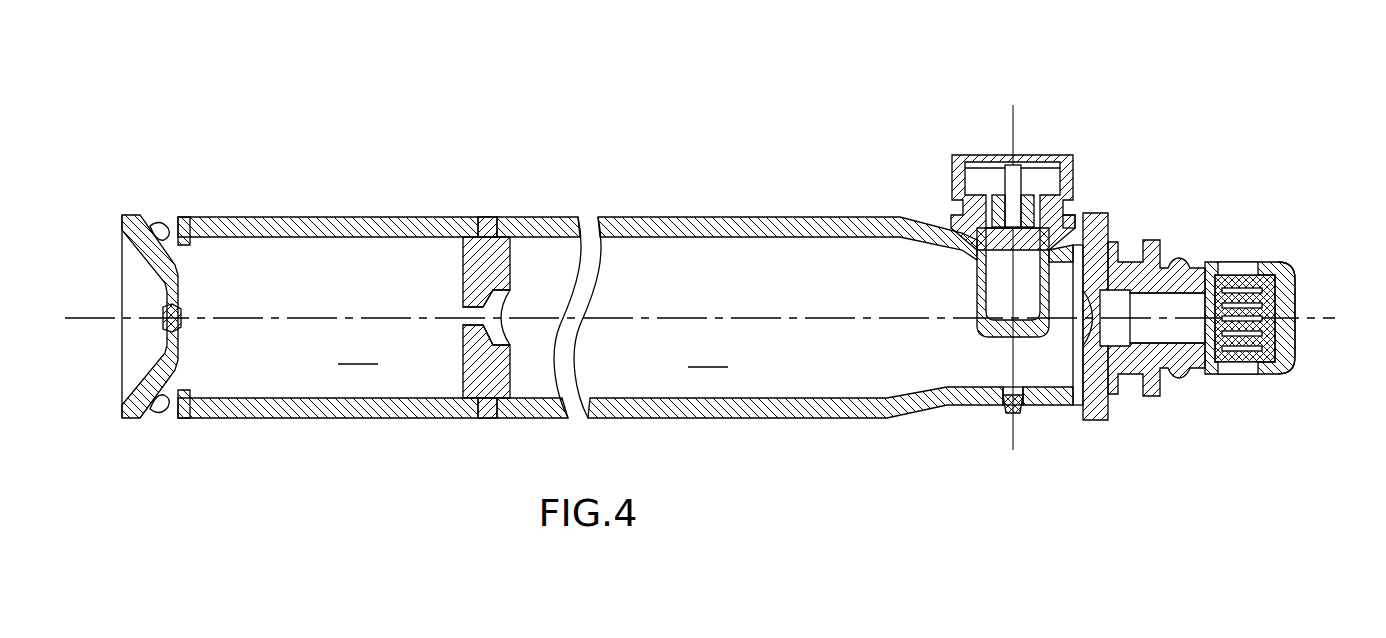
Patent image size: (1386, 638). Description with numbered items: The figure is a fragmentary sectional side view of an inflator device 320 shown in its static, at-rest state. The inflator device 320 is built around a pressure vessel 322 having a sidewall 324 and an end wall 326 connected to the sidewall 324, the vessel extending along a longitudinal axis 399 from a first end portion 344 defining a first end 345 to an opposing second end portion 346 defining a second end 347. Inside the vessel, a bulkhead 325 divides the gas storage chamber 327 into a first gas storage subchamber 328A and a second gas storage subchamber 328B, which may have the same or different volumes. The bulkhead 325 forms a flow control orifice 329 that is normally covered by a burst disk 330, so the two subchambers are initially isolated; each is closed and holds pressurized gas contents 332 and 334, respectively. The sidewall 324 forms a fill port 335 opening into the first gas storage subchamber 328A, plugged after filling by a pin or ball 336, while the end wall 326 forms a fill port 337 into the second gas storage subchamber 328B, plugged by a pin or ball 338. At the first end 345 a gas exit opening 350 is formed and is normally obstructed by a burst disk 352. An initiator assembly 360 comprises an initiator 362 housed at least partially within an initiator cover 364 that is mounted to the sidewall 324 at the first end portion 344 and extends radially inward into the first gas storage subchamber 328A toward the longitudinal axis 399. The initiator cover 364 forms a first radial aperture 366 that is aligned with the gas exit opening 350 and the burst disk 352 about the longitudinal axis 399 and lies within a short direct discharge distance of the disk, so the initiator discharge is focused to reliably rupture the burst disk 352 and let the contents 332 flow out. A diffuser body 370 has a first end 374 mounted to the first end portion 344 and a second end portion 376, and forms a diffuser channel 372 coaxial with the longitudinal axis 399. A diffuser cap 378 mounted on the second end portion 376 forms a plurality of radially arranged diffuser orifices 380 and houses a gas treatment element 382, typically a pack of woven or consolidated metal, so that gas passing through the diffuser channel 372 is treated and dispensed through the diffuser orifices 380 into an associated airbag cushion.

The inflator device 320 is at (615, 155).
The pressure vessel 322 is at (383, 222).
The sidewall 324 is at (283, 222).
The bulkhead 325 is at (490, 228).
The end wall 326 is at (160, 225).
The gas storage chamber 327 is at (786, 250).
The first gas storage subchamber 328A is at (800, 385).
The second gas storage subchamber 328B is at (405, 380).
The flow control orifice 329 is at (487, 310).
The burst disk 330 is at (512, 297).
The gas storage subchamber contents 332 is at (708, 352).
The gas storage subchamber contents 334 is at (358, 349).
The fill port 335 is at (1003, 393).
The pin or ball 336 is at (1005, 413).
The fill port 337 is at (181, 315).
The pin or ball 338 is at (160, 330).
The first end portion 344 is at (1070, 412).
The first end 345 is at (1090, 425).
The second end portion 346 is at (283, 405).
The second end 347 is at (160, 415).
The gas exit opening 350 is at (1117, 247).
The burst disk 352 is at (1167, 318).
The initiator assembly 360 is at (1040, 128).
The initiator 362 is at (1068, 215).
The initiator cover 364 is at (950, 190).
The first radial aperture 366 is at (1050, 328).
The diffuser body 370 is at (1160, 392).
The diffuser channel 372 is at (1198, 372).
The first end 374 is at (1120, 410).
The second end portion 376 is at (1193, 280).
The diffuser cap 378 is at (1275, 378).
The diffuser orifices 380 is at (1240, 263).
The gas treatment element 382 is at (1273, 307).
The longitudinal axis 399 is at (680, 318).